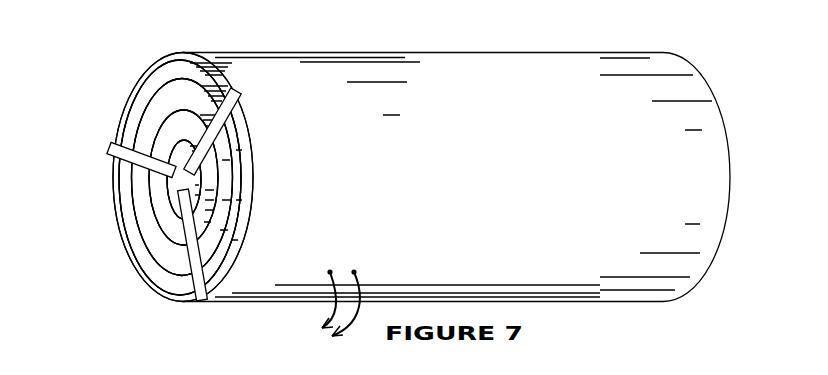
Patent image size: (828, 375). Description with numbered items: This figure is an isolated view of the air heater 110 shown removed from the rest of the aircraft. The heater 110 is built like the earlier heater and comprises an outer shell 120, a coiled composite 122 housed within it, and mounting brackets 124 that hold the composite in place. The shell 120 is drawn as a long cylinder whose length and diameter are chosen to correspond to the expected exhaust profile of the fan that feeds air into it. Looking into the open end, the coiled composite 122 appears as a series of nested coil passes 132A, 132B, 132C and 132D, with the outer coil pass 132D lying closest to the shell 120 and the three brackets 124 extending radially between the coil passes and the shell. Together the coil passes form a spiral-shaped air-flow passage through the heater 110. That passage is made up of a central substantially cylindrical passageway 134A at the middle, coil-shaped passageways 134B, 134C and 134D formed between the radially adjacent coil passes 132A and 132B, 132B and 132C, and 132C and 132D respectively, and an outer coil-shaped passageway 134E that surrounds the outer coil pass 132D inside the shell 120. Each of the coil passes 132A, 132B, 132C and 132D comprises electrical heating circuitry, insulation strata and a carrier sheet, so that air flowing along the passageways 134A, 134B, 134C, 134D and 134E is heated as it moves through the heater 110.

The heater 110 is at (503, 42).
The outer shell 120 is at (366, 70).
The coiled composite 122 is at (150, 97).
The mounting brackets 124 is at (229, 86).
The coil pass 132A is at (208, 200).
The coil pass 132B is at (222, 190).
The coil pass 132C is at (231, 173).
The outer coil pass 132D is at (241, 152).
The central substantially cylindrical passageway 134A is at (170, 212).
The coil-shaped passageway 134B is at (167, 241).
The coil-shaped passageway 134C is at (168, 276).
The coil-shaped passageway 134D is at (158, 296).
The outer coil-shaped passageway 134E is at (213, 300).